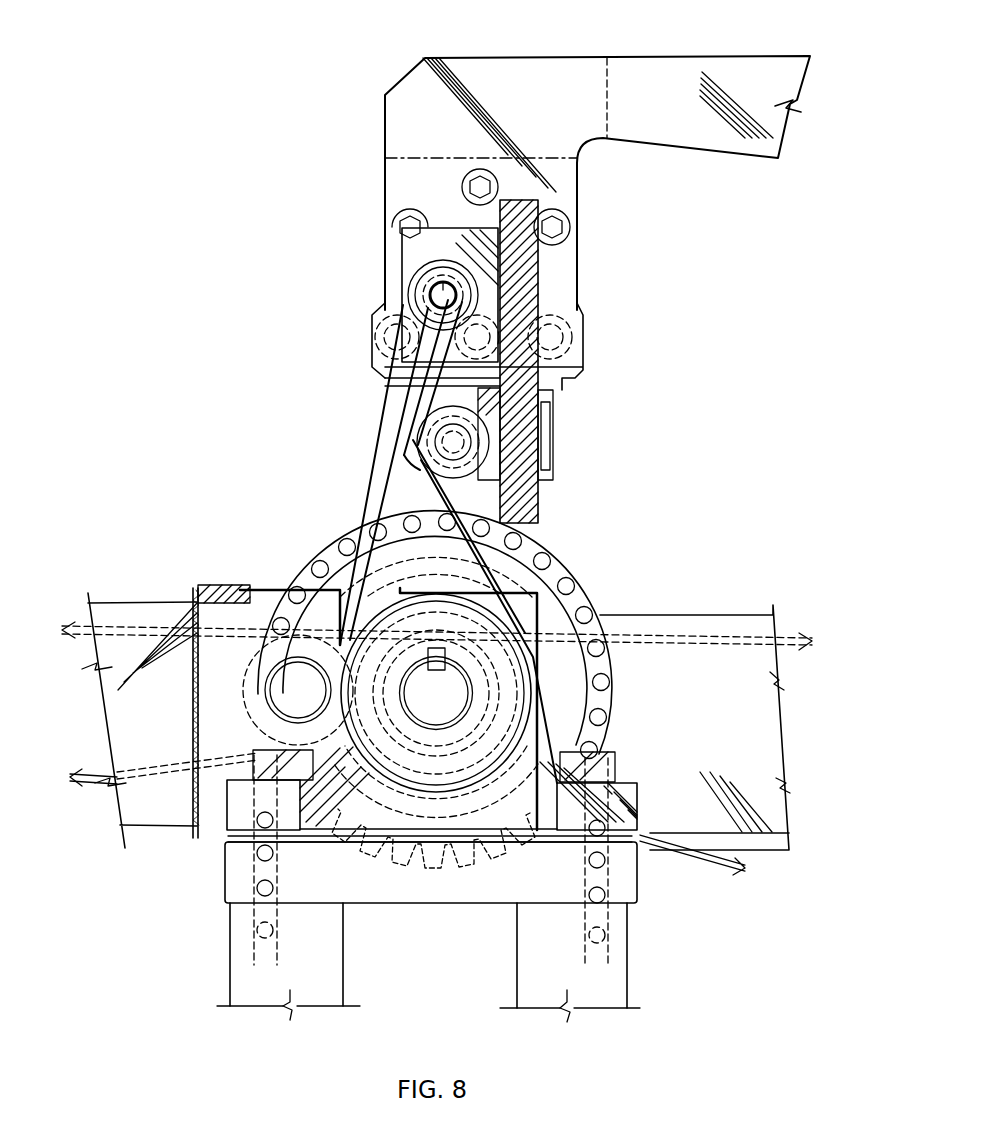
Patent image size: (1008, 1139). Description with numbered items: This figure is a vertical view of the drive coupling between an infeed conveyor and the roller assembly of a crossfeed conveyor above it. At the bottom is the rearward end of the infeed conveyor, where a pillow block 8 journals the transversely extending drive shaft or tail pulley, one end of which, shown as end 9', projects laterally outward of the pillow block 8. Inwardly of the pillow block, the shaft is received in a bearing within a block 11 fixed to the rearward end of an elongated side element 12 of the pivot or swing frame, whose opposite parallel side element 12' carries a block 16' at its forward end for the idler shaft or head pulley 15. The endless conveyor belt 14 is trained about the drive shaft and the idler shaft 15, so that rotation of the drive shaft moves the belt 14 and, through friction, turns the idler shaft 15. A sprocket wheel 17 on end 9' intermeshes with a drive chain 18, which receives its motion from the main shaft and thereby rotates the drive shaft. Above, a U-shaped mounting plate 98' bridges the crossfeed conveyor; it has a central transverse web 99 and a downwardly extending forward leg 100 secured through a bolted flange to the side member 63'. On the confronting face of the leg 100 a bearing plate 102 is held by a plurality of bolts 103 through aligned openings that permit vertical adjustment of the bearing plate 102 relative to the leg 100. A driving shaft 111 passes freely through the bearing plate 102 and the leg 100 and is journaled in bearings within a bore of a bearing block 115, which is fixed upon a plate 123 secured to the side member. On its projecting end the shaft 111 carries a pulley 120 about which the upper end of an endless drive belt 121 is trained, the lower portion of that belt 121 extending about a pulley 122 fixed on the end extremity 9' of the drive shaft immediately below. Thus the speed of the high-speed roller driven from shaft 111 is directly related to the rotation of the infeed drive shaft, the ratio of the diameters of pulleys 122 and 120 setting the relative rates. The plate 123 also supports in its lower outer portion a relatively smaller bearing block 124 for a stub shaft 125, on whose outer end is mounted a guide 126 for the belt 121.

The mounting plate 98' is at (802, 31).
The central transverse web 99 is at (800, 82).
The forward leg 100 is at (385, 112).
The bolts 103 is at (462, 180).
The bearing block 115 is at (420, 222).
The pulley 120 is at (420, 270).
The driving shaft 111 is at (440, 292).
The bearing plate 102 is at (372, 335).
The endless drive belt 121 is at (380, 390).
The stub shaft 125 is at (445, 438).
The guide 126 is at (440, 446).
The bearing block 124 is at (430, 466).
The plate 123 is at (535, 270).
The side member 63' is at (582, 435).
The drive chain 18 is at (532, 545).
The sprocket wheel 17 is at (555, 575).
The block 11 is at (580, 605).
The end of drive shaft 9' is at (514, 665).
The pulley 122 is at (463, 673).
The idler shaft or head pulley 15 is at (290, 657).
The side element 12 is at (714, 704).
The endless conveyor belt 14 is at (790, 636).
The side element 12' is at (126, 721).
The pillow block 8 is at (232, 817).
The block 16' is at (395, 888).